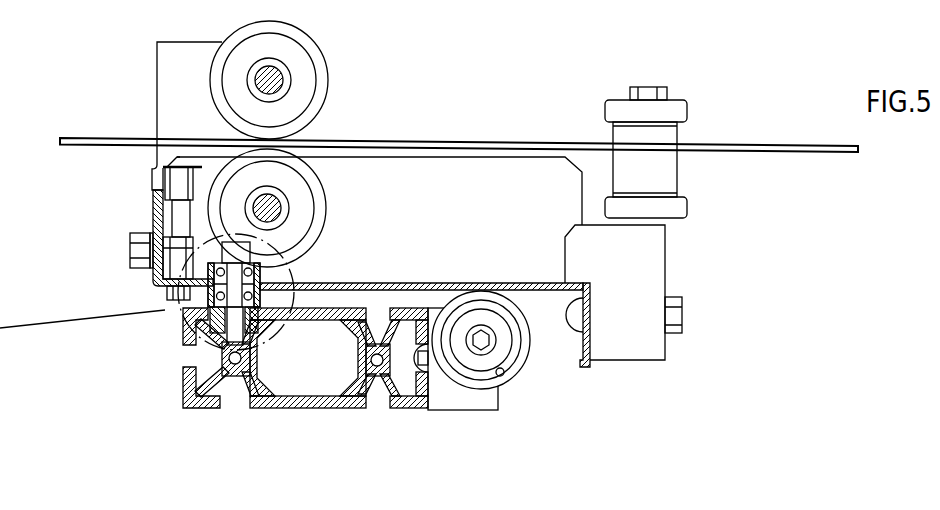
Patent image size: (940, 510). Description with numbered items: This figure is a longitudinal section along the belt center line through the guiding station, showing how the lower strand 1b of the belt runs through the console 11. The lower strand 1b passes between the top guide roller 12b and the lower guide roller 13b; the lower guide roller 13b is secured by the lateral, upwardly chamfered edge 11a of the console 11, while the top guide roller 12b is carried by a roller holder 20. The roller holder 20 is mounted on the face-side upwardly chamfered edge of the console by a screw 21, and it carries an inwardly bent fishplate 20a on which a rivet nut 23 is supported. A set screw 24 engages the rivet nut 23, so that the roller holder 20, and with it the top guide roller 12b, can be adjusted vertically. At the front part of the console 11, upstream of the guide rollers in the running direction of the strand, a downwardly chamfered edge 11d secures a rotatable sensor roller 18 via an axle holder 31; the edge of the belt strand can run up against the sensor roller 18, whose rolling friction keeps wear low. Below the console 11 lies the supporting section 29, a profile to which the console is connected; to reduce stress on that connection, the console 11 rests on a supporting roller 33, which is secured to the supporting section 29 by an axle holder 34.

The lower strand of belt 1b is at (790, 143).
The console 11 is at (422, 241).
The lateral upwardly chamfered edge 11a is at (468, 157).
The downwardly chamfered edge 11d is at (585, 340).
The top guide roller 12b is at (321, 52).
The lower guide roller 13b is at (324, 193).
The sensor roller 18 is at (680, 135).
The roller holder 20 is at (157, 72).
The inwardly bent fishplate 20a is at (162, 165).
The screw 21 is at (135, 253).
The rivet nut 23 is at (177, 188).
The set screw 24 is at (160, 296).
The supporting section 29 is at (183, 392).
The axle holder 31 is at (665, 243).
The supporting roller 33 is at (527, 367).
The axle holder 34 is at (468, 410).